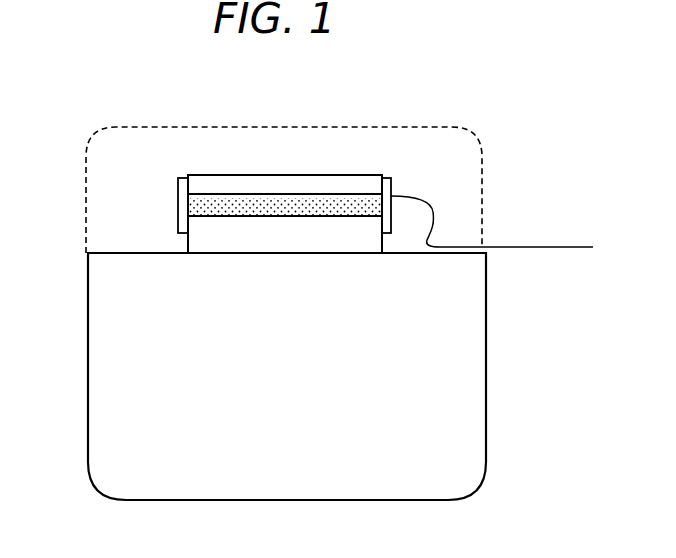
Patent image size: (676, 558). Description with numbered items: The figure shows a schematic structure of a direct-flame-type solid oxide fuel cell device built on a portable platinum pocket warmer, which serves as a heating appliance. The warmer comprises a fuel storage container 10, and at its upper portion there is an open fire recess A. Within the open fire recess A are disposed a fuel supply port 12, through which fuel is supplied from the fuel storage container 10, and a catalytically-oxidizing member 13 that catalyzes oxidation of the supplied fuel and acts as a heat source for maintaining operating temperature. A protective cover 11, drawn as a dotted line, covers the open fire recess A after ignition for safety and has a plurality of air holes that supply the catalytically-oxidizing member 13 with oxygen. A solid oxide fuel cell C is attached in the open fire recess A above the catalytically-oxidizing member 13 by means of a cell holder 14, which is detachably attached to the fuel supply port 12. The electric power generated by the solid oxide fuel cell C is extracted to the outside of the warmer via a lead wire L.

The fuel storage container 10 is at (486, 427).
The protective cover 11 is at (473, 146).
The fuel supply port 12 is at (239, 239).
The catalytically-oxidizing member 13 is at (323, 213).
The cell holder 14 is at (391, 192).
The lead wire L is at (502, 229).
The solid oxide fuel cell C is at (303, 172).
The open fire recess A is at (168, 168).